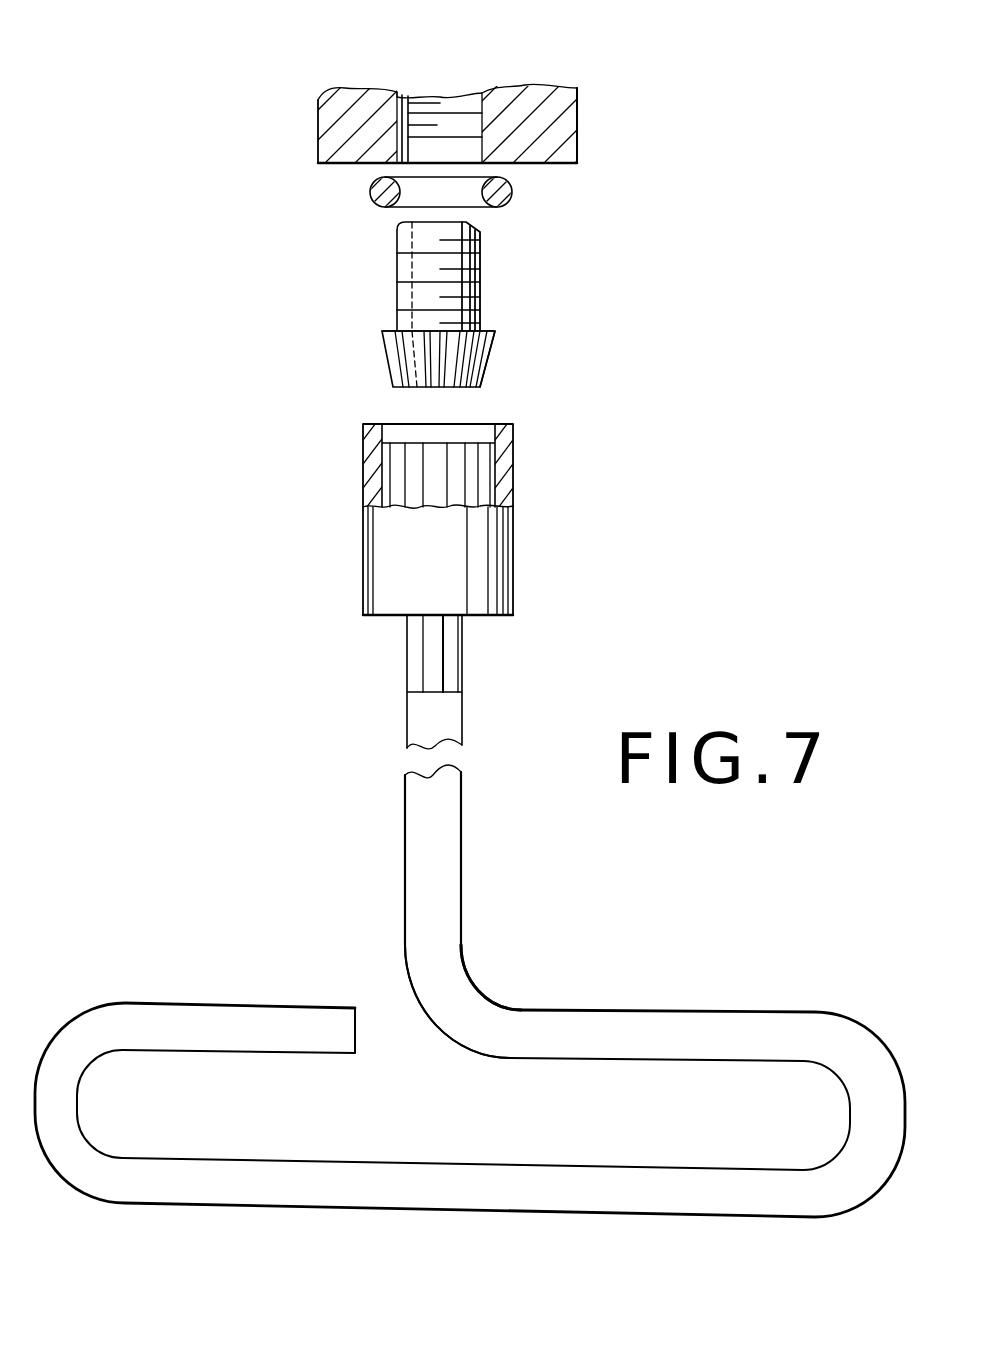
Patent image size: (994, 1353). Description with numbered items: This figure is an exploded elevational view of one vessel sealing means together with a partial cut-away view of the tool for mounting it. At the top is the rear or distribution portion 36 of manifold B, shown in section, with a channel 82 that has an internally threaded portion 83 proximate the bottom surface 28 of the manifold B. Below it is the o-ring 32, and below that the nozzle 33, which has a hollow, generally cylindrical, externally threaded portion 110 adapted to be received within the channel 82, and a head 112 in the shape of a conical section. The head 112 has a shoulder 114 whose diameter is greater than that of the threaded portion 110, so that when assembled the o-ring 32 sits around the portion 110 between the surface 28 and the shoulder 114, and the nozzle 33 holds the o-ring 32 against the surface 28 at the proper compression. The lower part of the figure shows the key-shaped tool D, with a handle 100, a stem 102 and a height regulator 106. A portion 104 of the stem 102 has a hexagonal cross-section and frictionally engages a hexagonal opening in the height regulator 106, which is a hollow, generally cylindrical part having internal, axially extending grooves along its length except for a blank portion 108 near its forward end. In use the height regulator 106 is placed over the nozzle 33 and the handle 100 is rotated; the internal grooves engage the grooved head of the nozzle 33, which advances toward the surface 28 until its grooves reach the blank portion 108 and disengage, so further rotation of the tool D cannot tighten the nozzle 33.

The bottom surface 28 is at (567, 168).
The o-ring 32 is at (370, 190).
The nozzle 33 is at (492, 262).
The rear or distribution portion 36 is at (333, 110).
The channel 82 is at (468, 100).
The internally threaded portion 83 is at (423, 100).
The handle 100 is at (190, 1033).
The stem 102 is at (427, 822).
The portion of stem 104 is at (413, 652).
The height regulator 106 is at (352, 546).
The blank portion 108 is at (477, 435).
The externally threaded portion 110 is at (402, 270).
The head 112 is at (387, 357).
The shoulder 114 is at (497, 325).
The manifold B is at (585, 125).
The tool D is at (515, 998).